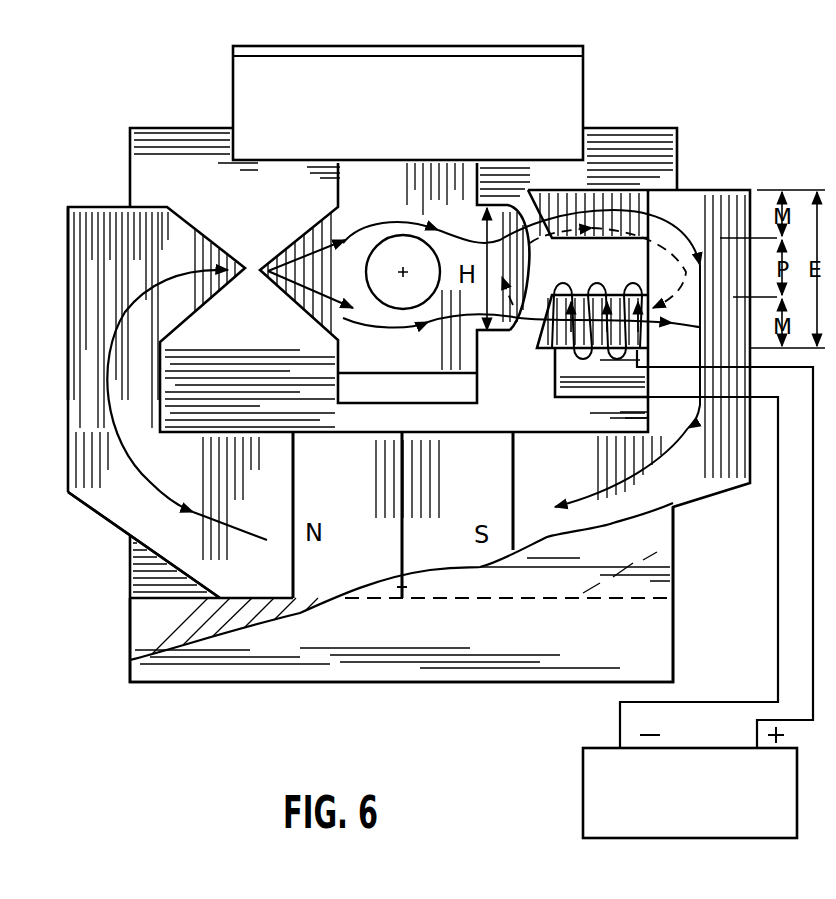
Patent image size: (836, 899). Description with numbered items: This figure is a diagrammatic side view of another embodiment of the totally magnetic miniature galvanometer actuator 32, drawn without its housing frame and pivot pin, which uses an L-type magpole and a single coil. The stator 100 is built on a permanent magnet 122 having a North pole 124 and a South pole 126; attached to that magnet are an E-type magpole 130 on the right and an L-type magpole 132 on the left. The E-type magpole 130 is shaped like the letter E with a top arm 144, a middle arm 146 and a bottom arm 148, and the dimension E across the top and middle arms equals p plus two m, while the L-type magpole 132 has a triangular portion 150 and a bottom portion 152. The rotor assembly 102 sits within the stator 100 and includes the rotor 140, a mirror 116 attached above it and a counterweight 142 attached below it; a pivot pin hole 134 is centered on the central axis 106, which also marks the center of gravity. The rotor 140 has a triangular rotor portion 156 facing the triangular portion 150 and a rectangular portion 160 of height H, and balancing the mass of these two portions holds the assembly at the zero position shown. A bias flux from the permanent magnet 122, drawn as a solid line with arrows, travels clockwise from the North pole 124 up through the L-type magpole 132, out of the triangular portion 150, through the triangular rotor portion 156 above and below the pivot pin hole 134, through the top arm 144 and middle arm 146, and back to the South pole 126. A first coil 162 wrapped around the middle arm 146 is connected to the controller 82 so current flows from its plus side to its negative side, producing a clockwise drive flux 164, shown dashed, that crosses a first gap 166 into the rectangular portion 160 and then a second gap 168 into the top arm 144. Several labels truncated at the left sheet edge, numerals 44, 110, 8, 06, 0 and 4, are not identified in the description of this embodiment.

The mirror 116 is at (247, 46).
The rotor assembly 102 is at (230, 97).
The rotor 140 is at (343, 180).
The pivot pin hole 134 is at (385, 250).
The rectangular portion 160 is at (523, 203).
The second gap 168 is at (503, 240).
The drive flux 164 is at (627, 222).
The top arm 144 is at (630, 222).
The middle arm 146 is at (617, 297).
The triangular portion 150 is at (187, 240).
The triangular rotor portion 156 is at (260, 280).
The central axis 106 is at (398, 283).
The counterweight 142 is at (340, 378).
The first gap 166 is at (525, 335).
The first coil 162 is at (620, 353).
The E-type magpole 130 is at (712, 493).
The L-type magpole 132 is at (103, 505).
The bottom portion 152 is at (227, 505).
The stator 100 is at (67, 497).
The flux loop 44 is at (110, 423).
The miniature galvanometer actuator 32 is at (120, 612).
The North pole 124 is at (315, 557).
The permanent magnet 122 is at (380, 600).
The South pole 126 is at (473, 552).
The bottom arm 148 is at (553, 520).
The controller 82 is at (585, 795).
The left arm 110 is at (0, 200).
The partial numeral 8 is at (65, 114).
The partial numeral 06 is at (44, 346).
The partial numeral 0 is at (65, 569).
The partial numeral 4 is at (65, 655).